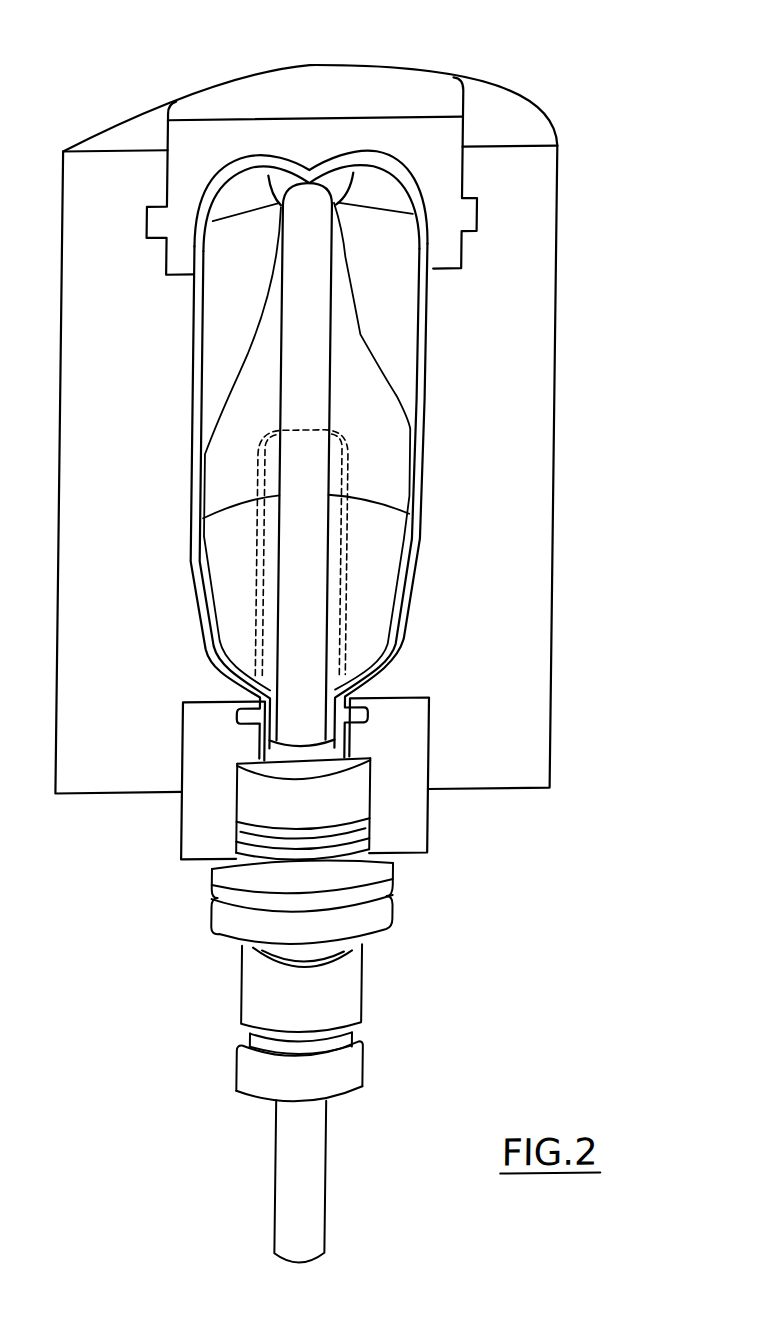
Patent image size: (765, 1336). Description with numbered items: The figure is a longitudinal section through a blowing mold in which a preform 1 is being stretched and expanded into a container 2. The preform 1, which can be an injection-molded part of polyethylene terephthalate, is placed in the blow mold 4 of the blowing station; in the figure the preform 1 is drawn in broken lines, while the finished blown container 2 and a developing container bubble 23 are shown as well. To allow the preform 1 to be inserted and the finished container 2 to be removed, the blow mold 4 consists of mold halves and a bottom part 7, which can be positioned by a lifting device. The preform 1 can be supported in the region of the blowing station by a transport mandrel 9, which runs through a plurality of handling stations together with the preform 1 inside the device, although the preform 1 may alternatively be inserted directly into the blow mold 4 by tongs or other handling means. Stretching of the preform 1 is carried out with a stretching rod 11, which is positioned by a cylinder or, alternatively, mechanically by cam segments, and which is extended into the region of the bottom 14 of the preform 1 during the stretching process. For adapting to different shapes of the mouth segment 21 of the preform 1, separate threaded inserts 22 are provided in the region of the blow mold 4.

The preform 1 is at (349, 598).
The container 2 is at (424, 375).
The blow mold 4 is at (512, 440).
The bottom part 7 is at (398, 83).
The transport mandrel 9 is at (389, 928).
The stretching rod 11 is at (282, 1195).
The bottom 14 is at (327, 431).
The mouth segment 21 is at (353, 730).
The threaded inserts 22 is at (414, 817).
The container bubble 23 is at (361, 334).